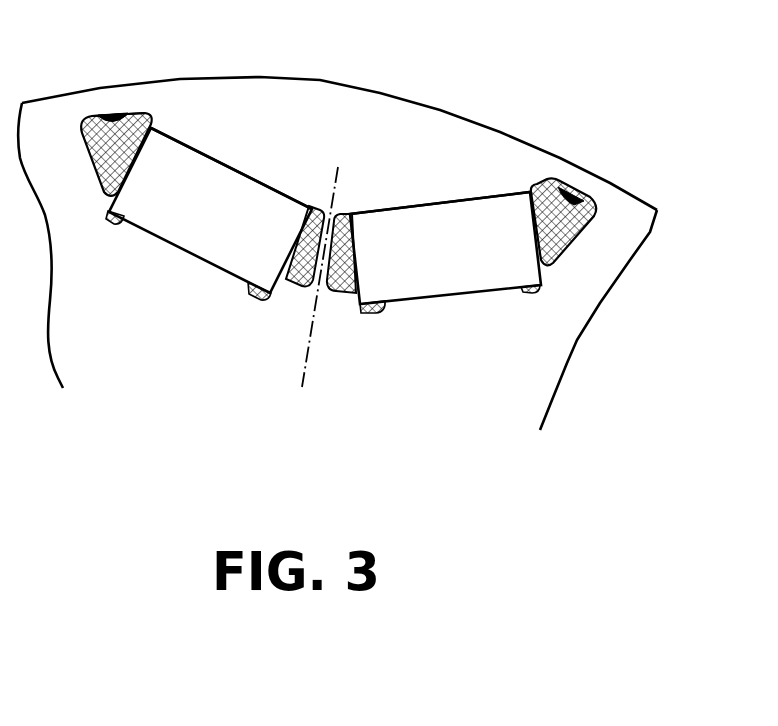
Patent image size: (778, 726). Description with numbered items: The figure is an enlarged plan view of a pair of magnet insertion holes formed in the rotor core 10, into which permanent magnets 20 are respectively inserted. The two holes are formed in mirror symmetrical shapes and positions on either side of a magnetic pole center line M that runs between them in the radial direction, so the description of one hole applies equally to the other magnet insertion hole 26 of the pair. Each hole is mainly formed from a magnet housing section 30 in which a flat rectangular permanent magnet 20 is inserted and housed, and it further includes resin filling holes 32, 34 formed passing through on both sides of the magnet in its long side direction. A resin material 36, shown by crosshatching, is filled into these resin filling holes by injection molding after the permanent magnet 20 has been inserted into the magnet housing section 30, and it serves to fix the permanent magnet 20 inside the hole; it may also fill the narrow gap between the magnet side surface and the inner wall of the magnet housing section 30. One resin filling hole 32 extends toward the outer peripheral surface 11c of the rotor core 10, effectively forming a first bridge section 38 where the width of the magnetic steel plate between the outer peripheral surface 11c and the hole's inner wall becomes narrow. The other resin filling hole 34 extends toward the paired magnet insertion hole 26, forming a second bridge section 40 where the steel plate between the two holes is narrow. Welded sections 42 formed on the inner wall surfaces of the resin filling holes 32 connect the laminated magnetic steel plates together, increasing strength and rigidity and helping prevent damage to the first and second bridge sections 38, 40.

The rotor core 10 is at (339, 235).
The outer peripheral surface 11c is at (432, 103).
The permanent magnet 20 is at (194, 231).
The magnet insertion hole 26 is at (444, 210).
The magnet housing section 30 is at (264, 190).
The resin filling hole 32 is at (140, 112).
The resin filling hole 34 is at (315, 207).
The resin material 36 is at (340, 211).
The first bridge section 38 is at (88, 108).
The second bridge section 40 is at (322, 294).
The welded section 42 is at (113, 110).
The magnetic pole center line M is at (311, 343).